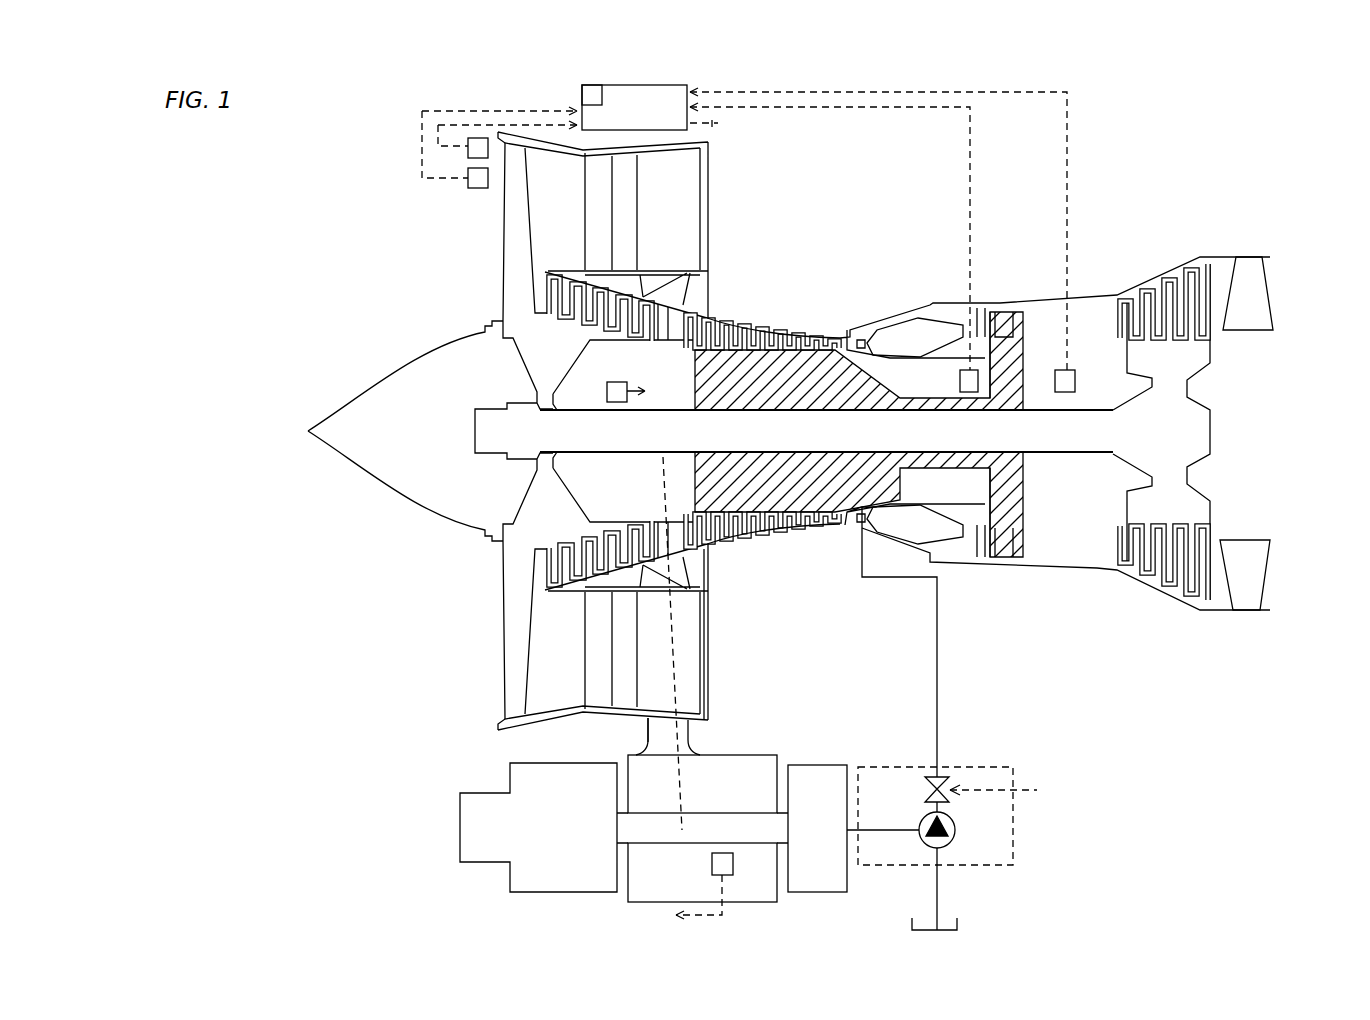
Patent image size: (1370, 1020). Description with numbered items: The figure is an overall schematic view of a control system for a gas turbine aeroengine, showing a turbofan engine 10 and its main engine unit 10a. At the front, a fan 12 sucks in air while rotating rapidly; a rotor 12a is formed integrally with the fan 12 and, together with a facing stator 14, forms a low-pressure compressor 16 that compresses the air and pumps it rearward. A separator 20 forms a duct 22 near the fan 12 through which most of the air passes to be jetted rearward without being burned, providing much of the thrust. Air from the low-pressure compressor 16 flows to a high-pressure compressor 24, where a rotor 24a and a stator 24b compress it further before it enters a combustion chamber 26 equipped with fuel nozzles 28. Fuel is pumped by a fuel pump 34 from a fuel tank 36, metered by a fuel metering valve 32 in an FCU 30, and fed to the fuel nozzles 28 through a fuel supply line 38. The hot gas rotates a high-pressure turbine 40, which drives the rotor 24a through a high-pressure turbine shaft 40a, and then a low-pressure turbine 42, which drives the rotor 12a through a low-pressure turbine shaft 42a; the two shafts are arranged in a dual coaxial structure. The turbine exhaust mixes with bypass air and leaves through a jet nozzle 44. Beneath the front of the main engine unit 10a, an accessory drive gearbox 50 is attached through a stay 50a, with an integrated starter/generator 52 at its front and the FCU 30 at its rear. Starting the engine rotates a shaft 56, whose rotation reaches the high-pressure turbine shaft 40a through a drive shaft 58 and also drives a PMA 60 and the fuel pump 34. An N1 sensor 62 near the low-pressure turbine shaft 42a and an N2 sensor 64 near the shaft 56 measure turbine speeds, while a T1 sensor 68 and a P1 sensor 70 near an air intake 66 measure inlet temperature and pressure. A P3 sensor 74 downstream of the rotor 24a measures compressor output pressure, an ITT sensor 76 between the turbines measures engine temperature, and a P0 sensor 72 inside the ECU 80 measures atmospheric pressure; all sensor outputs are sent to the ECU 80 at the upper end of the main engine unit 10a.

The turbofan engine 10 is at (762, 224).
The main engine unit 10a is at (732, 624).
The fan 12 is at (502, 598).
The rotor 12a is at (590, 520).
The stator 14 is at (548, 590).
The low-pressure compressor 16 is at (659, 358).
The separator 20 is at (703, 276).
The duct 22 is at (680, 215).
The high-pressure compressor 24 is at (818, 536).
The rotor 24a is at (859, 359).
The stator 24b is at (772, 528).
The combustion chamber 26 is at (875, 335).
The fuel nozzles 28 is at (865, 512).
The FCU (Fuel Control Unit) 30 is at (860, 767).
The fuel metering valve 32 is at (940, 778).
The fuel pump 34 is at (920, 822).
The fuel tank 36 is at (912, 928).
The fuel supply line 38 is at (937, 655).
The high-pressure turbine 40 is at (1018, 353).
The high-pressure turbine shaft 40a is at (660, 458).
The low-pressure turbine 42 is at (1133, 372).
The low-pressure turbine shaft 42a is at (812, 442).
The jet nozzle 44 is at (1253, 383).
The accessory drive gearbox 50 is at (720, 755).
The stay 50a is at (648, 735).
The integrated starter/generator 52 is at (565, 839).
The shaft 56 is at (654, 846).
The drive shaft 58 is at (682, 786).
The PMA (Permanent Magnet Alternator) 60 is at (832, 840).
The N1 sensor 62 is at (604, 391).
The N2 sensor 64 is at (733, 865).
The air intake 66 is at (493, 128).
The T1 sensor 68 is at (472, 138).
The P1 sensor 70 is at (478, 188).
The P0 sensor 72 is at (582, 95).
The P3 sensor 74 is at (960, 381).
The ITT sensor 76 is at (1068, 370).
The ECU (Electronic Control Unit) 80 is at (669, 113).